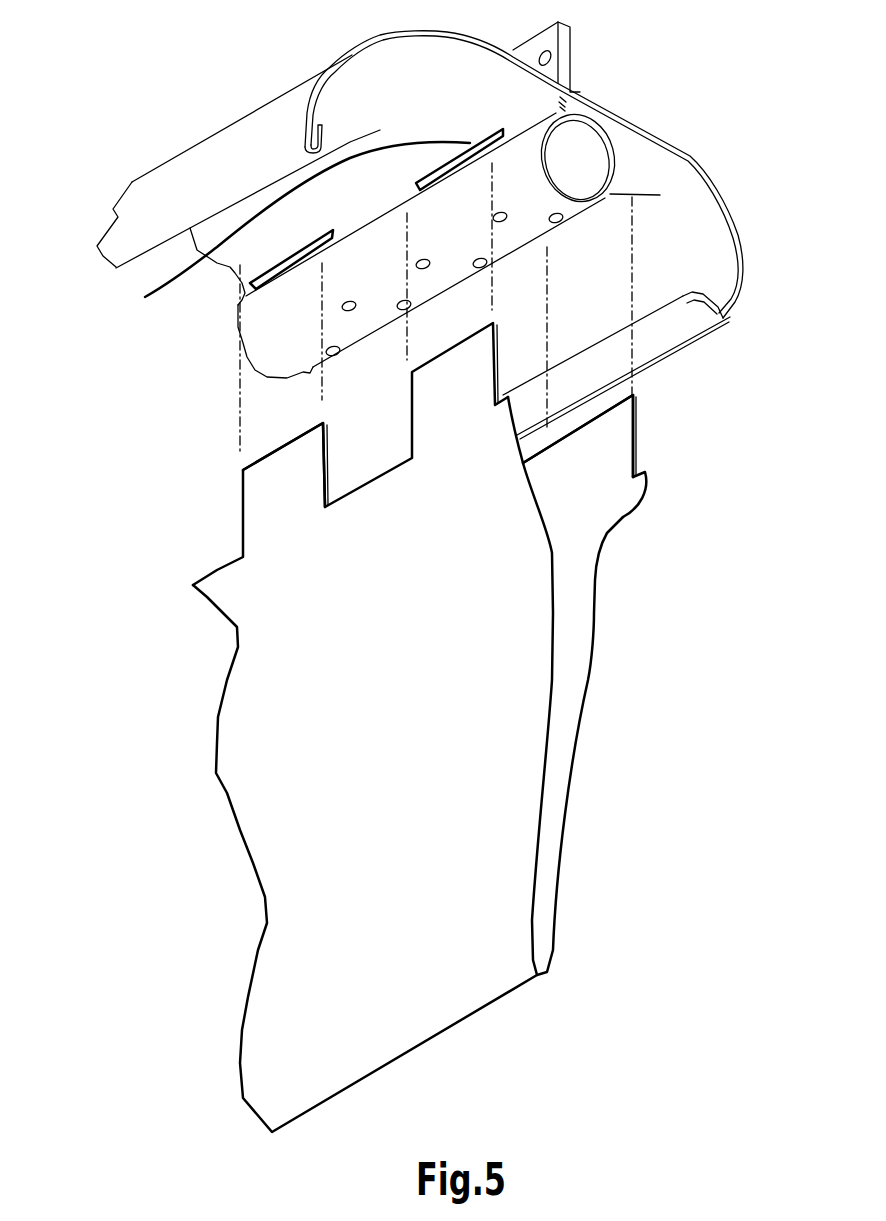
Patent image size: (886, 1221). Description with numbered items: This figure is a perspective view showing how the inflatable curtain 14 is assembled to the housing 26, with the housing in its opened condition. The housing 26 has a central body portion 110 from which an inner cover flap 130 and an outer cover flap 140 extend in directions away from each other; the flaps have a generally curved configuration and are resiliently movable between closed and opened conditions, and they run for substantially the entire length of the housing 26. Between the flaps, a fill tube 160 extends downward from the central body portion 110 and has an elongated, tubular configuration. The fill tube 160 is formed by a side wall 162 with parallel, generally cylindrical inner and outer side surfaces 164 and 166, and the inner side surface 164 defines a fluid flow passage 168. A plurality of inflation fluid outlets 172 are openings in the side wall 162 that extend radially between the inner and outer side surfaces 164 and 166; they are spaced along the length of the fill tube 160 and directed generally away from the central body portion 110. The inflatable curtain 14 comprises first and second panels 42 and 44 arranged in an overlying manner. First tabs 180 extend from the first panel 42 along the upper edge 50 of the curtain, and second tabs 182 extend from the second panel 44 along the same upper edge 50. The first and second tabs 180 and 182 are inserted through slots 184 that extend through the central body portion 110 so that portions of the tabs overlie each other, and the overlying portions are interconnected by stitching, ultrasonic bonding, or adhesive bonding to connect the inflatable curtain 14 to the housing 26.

The housing 26 is at (236, 50).
The inner cover flap 130 is at (200, 166).
The central body portion 110 is at (580, 110).
The outer cover flap 140 is at (720, 273).
The fluid flow passage 168 is at (577, 163).
The inner side surface 164 is at (597, 178).
The side wall 162 is at (610, 194).
The outer side surface 166 is at (578, 211).
The fill tube 160 is at (267, 319).
The slots 184 is at (323, 230).
The inflation fluid outlets 172 is at (430, 268).
The upper edge 50 is at (430, 727).
The second tabs 182 is at (432, 385).
The first tabs 180 is at (610, 440).
The first panel 42 is at (623, 498).
The inflatable curtain 14 is at (288, 795).
The second panel 44 is at (495, 818).